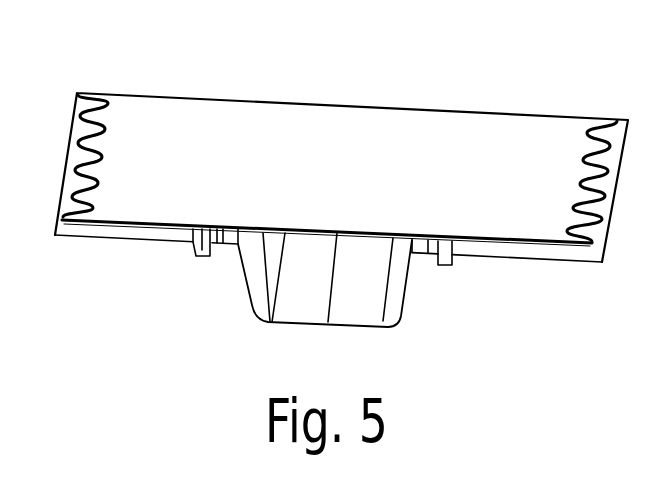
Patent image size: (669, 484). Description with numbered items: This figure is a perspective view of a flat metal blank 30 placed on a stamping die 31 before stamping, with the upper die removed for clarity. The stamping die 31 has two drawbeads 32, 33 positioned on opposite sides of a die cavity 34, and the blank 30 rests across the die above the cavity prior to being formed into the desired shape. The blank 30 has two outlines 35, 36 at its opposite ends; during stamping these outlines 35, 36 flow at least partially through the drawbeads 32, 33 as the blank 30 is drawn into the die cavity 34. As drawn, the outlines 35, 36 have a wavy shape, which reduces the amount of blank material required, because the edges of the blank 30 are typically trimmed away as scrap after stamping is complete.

The metal blank 30 is at (357, 127).
The stamping die 31 is at (98, 228).
The drawbead 32 is at (203, 257).
The drawbead 33 is at (447, 266).
The die cavity 34 is at (348, 310).
The outline 35 is at (588, 145).
The outline 36 is at (103, 117).